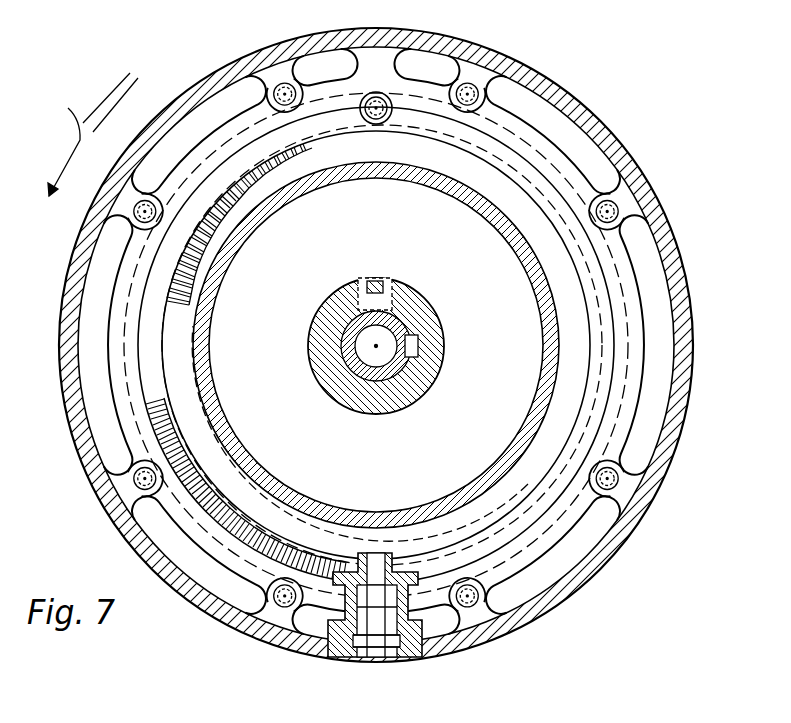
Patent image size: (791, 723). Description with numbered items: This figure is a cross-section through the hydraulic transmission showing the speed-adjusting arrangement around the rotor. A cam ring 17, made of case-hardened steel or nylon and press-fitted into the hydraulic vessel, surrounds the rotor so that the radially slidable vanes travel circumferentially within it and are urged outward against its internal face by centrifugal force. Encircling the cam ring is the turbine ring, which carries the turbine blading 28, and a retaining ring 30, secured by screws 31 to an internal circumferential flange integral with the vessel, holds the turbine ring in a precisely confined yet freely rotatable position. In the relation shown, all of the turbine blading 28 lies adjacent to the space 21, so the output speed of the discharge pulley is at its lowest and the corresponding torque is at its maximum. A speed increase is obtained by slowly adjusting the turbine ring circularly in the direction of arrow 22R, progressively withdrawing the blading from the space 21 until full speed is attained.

The cam ring 17 is at (343, 133).
The space 21 is at (315, 167).
The arrow 22R is at (86, 134).
The turbine blading 28 is at (243, 213).
The retaining ring 30 is at (630, 205).
The screws 31 is at (633, 167).